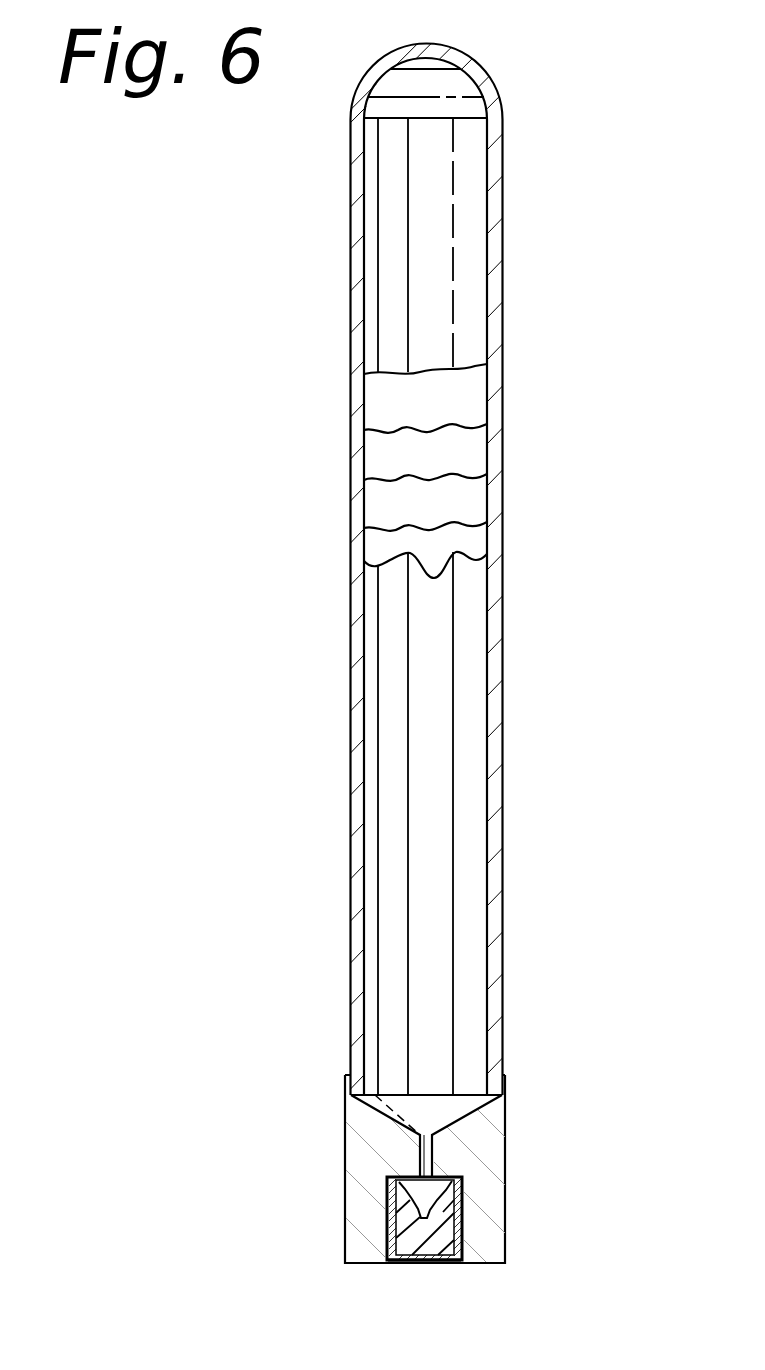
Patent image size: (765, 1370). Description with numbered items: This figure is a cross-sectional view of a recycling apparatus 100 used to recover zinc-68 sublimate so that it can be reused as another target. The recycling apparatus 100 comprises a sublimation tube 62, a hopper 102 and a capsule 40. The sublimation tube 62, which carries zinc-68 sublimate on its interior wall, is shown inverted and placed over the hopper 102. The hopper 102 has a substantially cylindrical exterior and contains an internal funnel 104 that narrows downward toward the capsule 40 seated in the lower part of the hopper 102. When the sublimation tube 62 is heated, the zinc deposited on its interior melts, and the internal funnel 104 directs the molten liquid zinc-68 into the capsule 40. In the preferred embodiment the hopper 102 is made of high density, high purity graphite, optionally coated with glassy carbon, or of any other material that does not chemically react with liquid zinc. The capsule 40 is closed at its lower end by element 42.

The recycling apparatus 100 is at (244, 674).
The sublimation tube 62 is at (501, 859).
The hopper 102 is at (505, 1135).
The internal funnel 104 is at (410, 1115).
The capsule 40 is at (463, 1212).
The bottom wall 42 is at (447, 1263).